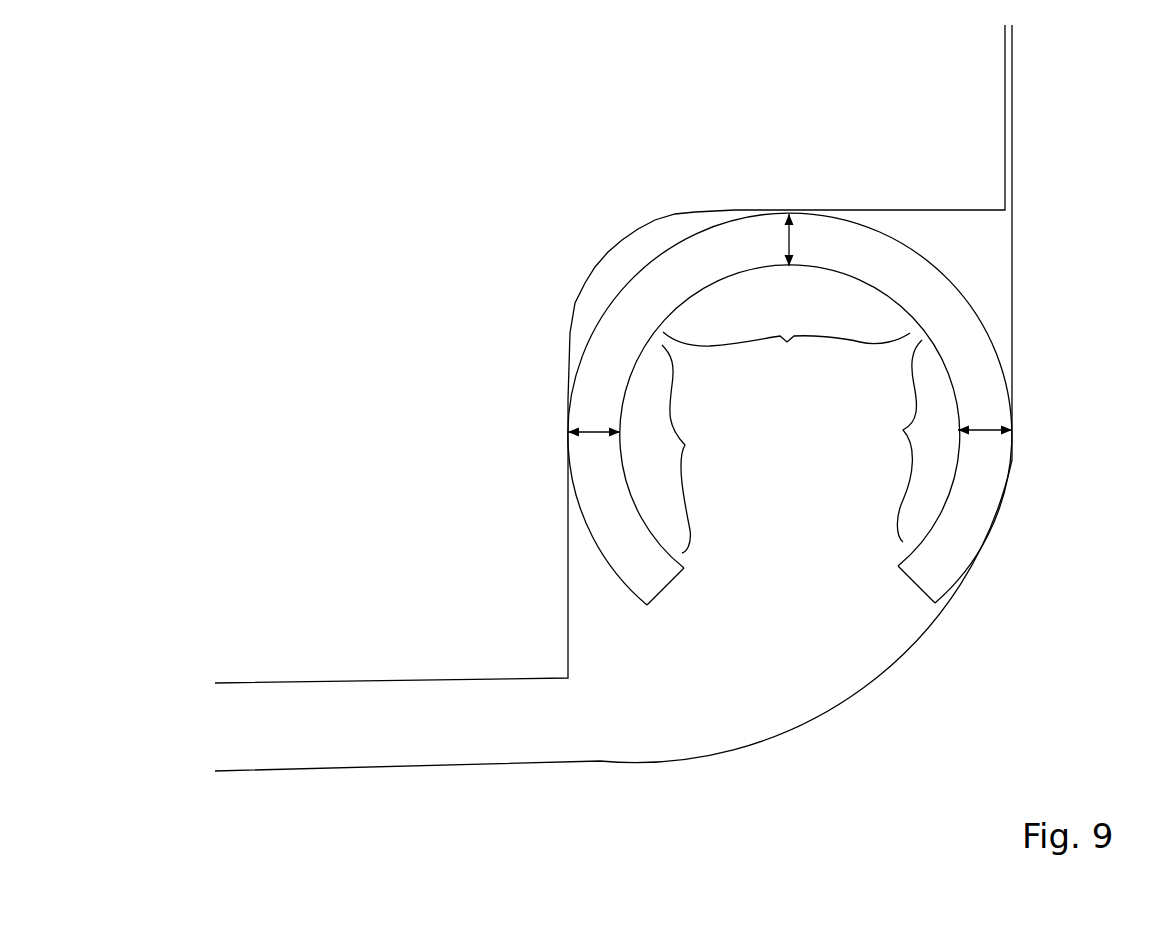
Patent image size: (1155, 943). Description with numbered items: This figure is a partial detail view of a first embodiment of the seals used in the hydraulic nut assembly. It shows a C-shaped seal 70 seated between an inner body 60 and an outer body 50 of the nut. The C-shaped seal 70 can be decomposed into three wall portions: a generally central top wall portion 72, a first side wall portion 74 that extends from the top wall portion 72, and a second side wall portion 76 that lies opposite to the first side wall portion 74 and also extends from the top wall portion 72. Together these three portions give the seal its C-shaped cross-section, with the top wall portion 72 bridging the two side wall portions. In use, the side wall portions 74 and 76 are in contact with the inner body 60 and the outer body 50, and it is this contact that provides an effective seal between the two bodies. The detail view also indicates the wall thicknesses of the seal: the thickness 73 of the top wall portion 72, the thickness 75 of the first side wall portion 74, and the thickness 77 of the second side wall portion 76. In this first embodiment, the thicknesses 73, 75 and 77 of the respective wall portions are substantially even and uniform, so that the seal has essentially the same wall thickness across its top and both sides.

The outer body 50 is at (685, 398).
The inner body 60 is at (610, 354).
The C-shaped seal 70 is at (998, 299).
The top wall portion 72 is at (785, 357).
The thickness of the top wall portion 73 is at (800, 243).
The first side wall portion 74 is at (892, 437).
The thickness of the first side wall portion 75 is at (988, 440).
The second side wall portion 76 is at (696, 452).
The thickness of the second side wall portion 77 is at (597, 447).